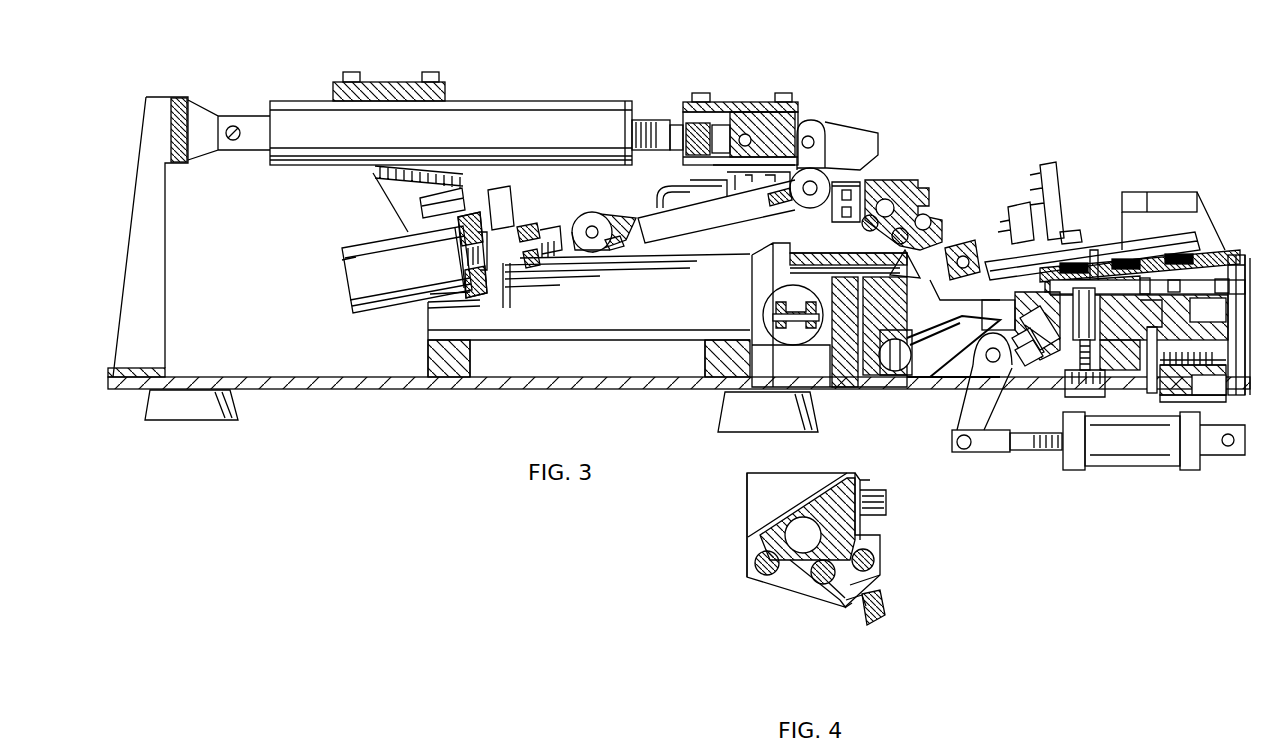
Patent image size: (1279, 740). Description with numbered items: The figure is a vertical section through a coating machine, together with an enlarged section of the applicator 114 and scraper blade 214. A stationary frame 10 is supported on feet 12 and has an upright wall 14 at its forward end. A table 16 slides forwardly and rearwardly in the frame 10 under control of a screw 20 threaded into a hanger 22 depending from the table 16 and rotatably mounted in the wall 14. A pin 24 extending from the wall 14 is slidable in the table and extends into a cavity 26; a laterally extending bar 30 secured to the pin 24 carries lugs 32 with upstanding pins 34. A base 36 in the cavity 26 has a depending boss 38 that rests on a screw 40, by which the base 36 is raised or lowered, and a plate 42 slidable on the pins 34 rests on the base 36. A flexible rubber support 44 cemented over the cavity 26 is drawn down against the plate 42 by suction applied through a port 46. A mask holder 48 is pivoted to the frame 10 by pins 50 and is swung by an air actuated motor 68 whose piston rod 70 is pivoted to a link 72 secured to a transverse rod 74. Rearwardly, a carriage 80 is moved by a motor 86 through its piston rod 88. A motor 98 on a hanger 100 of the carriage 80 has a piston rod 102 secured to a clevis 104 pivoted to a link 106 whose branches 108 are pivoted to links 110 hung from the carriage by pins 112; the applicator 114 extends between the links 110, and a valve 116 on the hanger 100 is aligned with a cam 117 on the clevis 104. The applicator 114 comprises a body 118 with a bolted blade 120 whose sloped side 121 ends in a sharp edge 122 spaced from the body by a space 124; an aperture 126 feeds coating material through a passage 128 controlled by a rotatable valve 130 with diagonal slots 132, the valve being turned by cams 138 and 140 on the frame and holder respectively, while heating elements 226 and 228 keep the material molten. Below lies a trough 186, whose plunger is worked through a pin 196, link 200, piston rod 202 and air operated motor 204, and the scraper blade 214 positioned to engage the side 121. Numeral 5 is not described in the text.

In FIG. 3, the cylinder 5 is at (372, 255).
In FIG. 3, the stationary frame 10 is at (560, 390).
In FIG. 3, the feet 12 is at (752, 430).
In FIG. 3, the upright wall 14 is at (1248, 315).
In FIG. 3, the table 16 is at (1182, 310).
In FIG. 3, the screw 20 is at (1193, 375).
In FIG. 3, the hanger 22 is at (1165, 394).
In FIG. 3, the pin 24 is at (1240, 278).
In FIG. 3, the cavity 26 is at (1030, 302).
In FIG. 3, the bar 30 is at (1146, 335).
In FIG. 3, the lugs 32 is at (1145, 322).
In FIG. 3, the pins 34 is at (1150, 256).
In FIG. 3, the base 36 is at (1068, 235).
In FIG. 3, the boss 38 is at (1052, 348).
In FIG. 3, the screw 40 is at (1096, 366).
In FIG. 3, the plate 42 is at (1098, 250).
In FIG. 3, the support 44 is at (1002, 246).
In FIG. 3, the port 46 is at (1030, 358).
In FIG. 3, the mask holder 48 is at (1160, 242).
In FIG. 3, the pins 50 is at (960, 255).
In FIG. 3, the air actuated motor 68 is at (1138, 440).
In FIG. 3, the piston rod 70 is at (1028, 446).
In FIG. 3, the link 72 is at (950, 432).
In FIG. 3, the transverse rod 74 is at (986, 380).
In FIG. 3, the carriage 80 is at (788, 130).
In FIG. 3, the air actuated motor 86 is at (295, 122).
In FIG. 3, the piston rod 88 is at (670, 122).
In FIG. 3, the air actuated motor 98 is at (400, 287).
In FIG. 3, the hanger 100 is at (487, 296).
In FIG. 3, the piston rod 102 is at (508, 300).
In FIG. 3, the clevis 104 is at (565, 232).
In FIG. 3, the link 106 is at (627, 234).
In FIG. 3, the branches 108 is at (694, 218).
In FIG. 3, the link 110 is at (862, 180).
In FIG. 3, the pin 112 is at (812, 138).
In FIG. 3, the applicator 114 is at (902, 190).
In FIG. 4, the applicator 114 is at (718, 508).
In FIG. 3, the valve 116 is at (420, 206).
In FIG. 3, the cam 117 is at (506, 200).
In FIG. 4, the body 118 is at (822, 482).
In FIG. 4, the blade 120 is at (872, 590).
In FIG. 4, the side 121 is at (850, 610).
In FIG. 4, the edge 122 is at (845, 608).
In FIG. 4, the space 124 is at (876, 582).
In FIG. 4, the aperture 126 is at (796, 537).
In FIG. 4, the passage 128 is at (832, 596).
In FIG. 4, the valve 130 is at (800, 582).
In FIG. 4, the diagonal slots 132 is at (812, 600).
In FIG. 3, the cam 138 is at (1172, 200).
In FIG. 3, the cam 140 is at (1066, 214).
In FIG. 3, the trough 186 is at (927, 377).
In FIG. 3, the pin 196 is at (848, 275).
In FIG. 3, the link 200 is at (762, 302).
In FIG. 3, the piston rod 202 is at (756, 330).
In FIG. 3, the air operated motor 204 is at (796, 338).
In FIG. 3, the scraper blade 214 is at (912, 288).
In FIG. 4, the scraper blade 214 is at (884, 618).
In FIG. 4, the heating element 226 is at (760, 580).
In FIG. 4, the heating element 228 is at (877, 560).